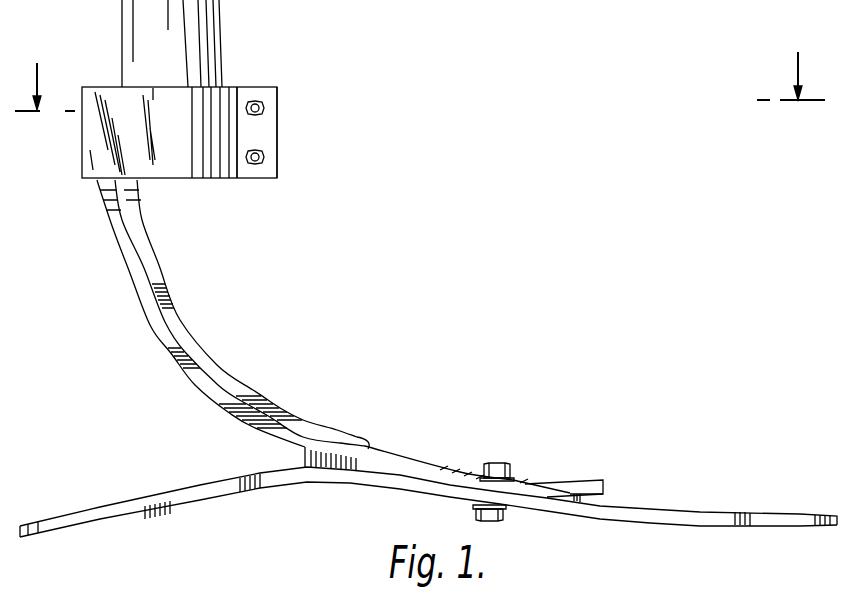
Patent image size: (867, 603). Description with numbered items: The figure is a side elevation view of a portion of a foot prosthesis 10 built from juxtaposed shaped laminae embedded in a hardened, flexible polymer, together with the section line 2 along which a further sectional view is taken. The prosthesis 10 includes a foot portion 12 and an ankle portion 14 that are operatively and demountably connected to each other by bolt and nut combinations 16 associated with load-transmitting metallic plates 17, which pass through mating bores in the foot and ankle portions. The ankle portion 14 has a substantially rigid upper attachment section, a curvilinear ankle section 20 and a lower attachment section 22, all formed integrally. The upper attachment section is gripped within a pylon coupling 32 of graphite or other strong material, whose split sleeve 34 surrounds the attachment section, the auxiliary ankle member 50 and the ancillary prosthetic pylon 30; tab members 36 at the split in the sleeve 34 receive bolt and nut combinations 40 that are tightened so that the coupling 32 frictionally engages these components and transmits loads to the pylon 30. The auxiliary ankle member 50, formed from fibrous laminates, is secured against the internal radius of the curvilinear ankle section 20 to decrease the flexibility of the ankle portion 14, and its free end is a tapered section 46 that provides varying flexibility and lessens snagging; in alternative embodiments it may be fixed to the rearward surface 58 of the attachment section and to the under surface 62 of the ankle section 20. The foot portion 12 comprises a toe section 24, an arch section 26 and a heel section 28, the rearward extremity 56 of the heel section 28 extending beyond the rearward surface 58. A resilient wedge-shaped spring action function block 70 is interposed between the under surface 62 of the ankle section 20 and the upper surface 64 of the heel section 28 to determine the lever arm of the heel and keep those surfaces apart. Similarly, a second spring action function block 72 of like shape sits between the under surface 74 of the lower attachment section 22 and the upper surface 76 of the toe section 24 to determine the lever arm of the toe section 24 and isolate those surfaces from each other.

The section line 2- 2 is at (420, 68).
The foot prosthesis 10 is at (474, 166).
The foot portion 12 is at (673, 526).
The ankle portion 14 is at (138, 320).
The bolt and nut combinations 16 is at (497, 462).
The load-transmitting metallic plates 17 is at (481, 466).
The curvilinear ankle section 20 is at (117, 263).
The lower attachment section 22 is at (423, 458).
The toe section 24 is at (813, 512).
The arch section 26 is at (560, 515).
The heel section 28 is at (182, 502).
The ancillary prosthetic pylon 30 is at (221, 41).
The pylon coupling 32 is at (186, 160).
The split sleeve 34 is at (230, 83).
The tab members 36 is at (272, 136).
The bolt and nut combinations 40 is at (268, 108).
The tapered section 46 is at (228, 372).
The auxiliary ankle member 50 is at (161, 270).
The rearward extremity 56 is at (30, 525).
The rearward surface 58 is at (97, 182).
The under surface 62 is at (227, 410).
The upper surface 64 is at (250, 477).
The function block 70 is at (353, 468).
The second spring action function block 72 is at (605, 500).
The under surface 74 is at (580, 482).
The upper surface 76 is at (697, 512).